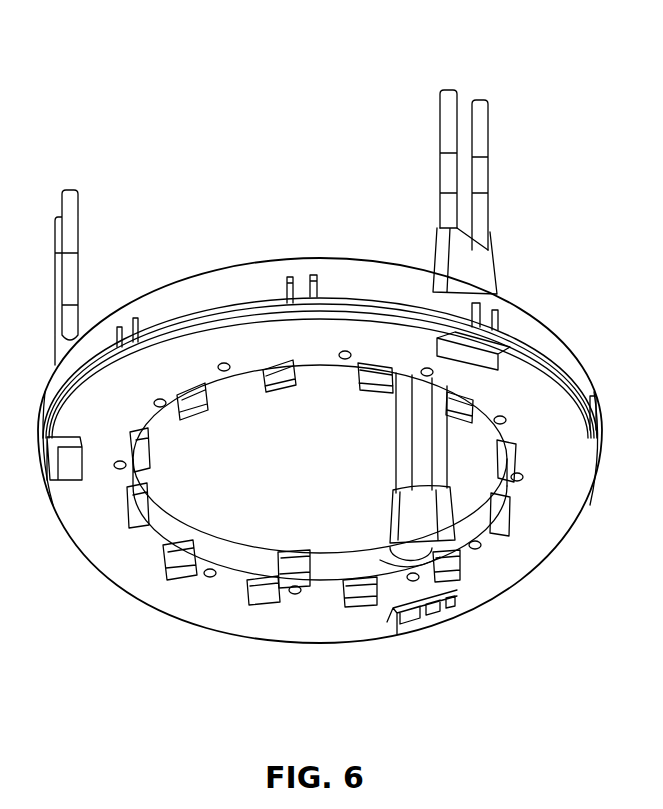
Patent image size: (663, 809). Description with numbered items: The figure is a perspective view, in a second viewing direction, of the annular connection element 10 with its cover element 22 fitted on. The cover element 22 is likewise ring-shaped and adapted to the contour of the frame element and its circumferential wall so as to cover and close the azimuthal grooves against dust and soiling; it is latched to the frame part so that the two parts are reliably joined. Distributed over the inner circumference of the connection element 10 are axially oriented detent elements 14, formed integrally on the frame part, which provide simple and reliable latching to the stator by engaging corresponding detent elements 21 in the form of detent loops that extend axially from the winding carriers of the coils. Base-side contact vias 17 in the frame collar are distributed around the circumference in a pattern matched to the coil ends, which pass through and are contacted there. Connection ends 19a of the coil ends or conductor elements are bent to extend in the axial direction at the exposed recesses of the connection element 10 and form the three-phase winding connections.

The connection element 10 is at (542, 537).
The detent elements 14 is at (133, 516).
The contact vias 17 is at (158, 405).
The connection ends 19a is at (73, 198).
The detent elements 21 is at (495, 305).
The cover element 22 is at (540, 337).